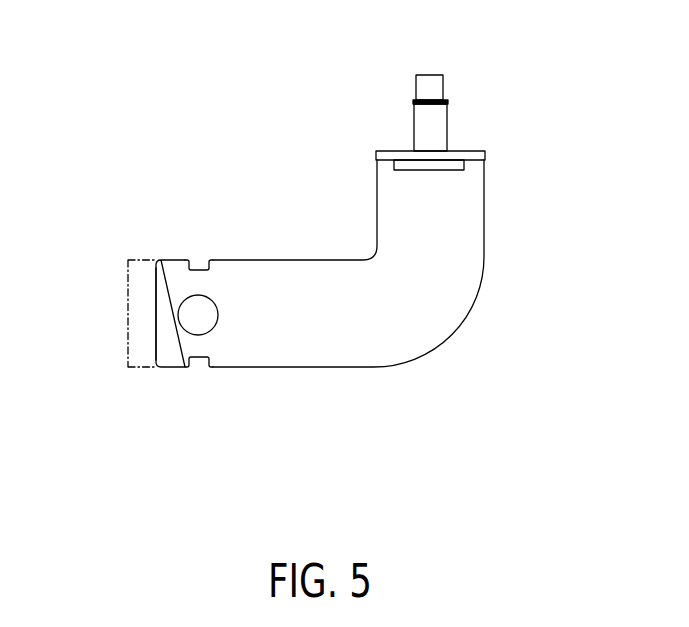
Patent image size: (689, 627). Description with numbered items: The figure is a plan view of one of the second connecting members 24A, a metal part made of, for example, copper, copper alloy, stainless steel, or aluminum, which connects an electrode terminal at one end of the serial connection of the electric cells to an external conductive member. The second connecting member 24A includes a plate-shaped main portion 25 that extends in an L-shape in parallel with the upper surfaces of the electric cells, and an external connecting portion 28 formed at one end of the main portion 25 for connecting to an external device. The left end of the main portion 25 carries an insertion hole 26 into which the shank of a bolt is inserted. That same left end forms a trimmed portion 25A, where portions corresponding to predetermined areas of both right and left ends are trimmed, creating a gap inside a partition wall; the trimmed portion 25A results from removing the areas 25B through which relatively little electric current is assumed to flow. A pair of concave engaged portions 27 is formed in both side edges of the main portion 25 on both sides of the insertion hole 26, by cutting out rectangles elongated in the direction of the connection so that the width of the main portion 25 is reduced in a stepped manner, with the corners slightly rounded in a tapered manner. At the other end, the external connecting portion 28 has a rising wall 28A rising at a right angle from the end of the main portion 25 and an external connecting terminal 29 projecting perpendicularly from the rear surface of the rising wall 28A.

The second connecting member 24A is at (379, 105).
The main portion 25 is at (385, 352).
The trimmed portion 25A is at (156, 338).
The areas 25B is at (128, 313).
The insertion hole 26 is at (213, 318).
The concave engaged portion 27 is at (198, 268).
The external connecting portion 28 is at (488, 122).
The rising wall 28A is at (485, 158).
The external connecting terminal 29 is at (447, 115).